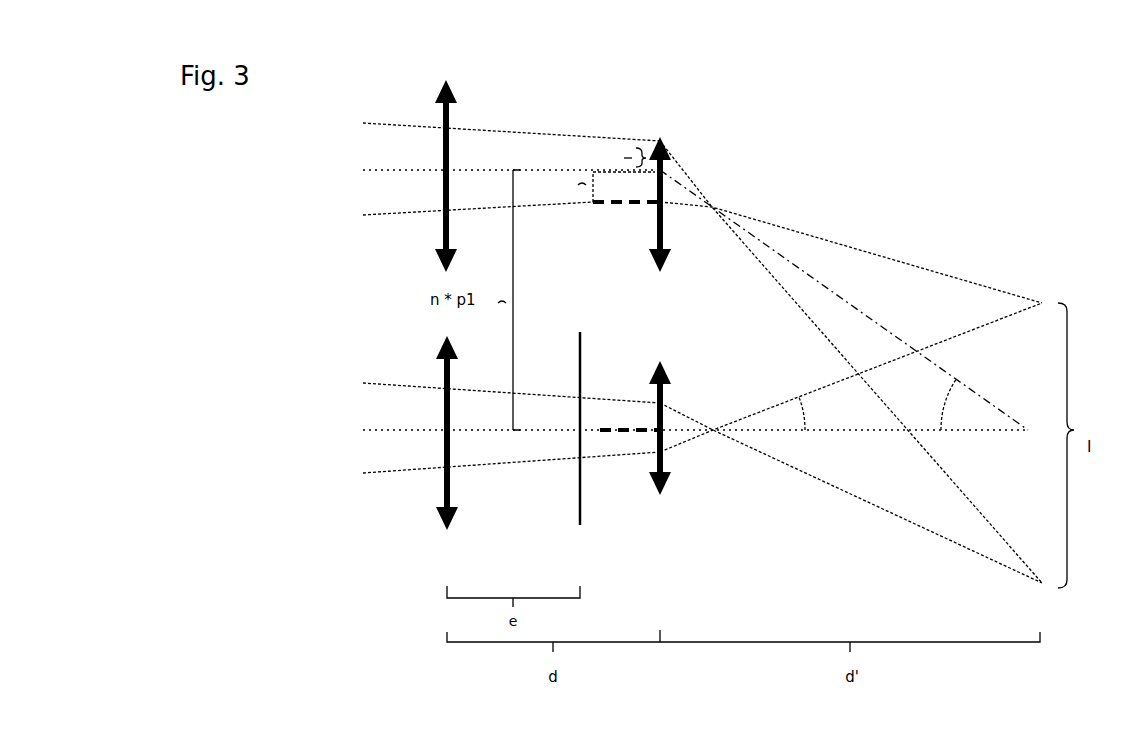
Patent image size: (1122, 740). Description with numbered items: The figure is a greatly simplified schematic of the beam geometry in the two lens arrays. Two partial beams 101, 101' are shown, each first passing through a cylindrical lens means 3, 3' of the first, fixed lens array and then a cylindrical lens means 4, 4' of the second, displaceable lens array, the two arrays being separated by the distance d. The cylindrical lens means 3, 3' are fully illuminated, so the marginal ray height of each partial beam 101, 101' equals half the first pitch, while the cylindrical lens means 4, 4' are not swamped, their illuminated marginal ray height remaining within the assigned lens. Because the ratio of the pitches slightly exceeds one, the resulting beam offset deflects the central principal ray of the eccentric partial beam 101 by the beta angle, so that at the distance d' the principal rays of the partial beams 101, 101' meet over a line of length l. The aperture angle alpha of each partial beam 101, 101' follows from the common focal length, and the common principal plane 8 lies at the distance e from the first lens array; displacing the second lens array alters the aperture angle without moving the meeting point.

The cylindrical lens means of the first lens array 3 is at (480, 158).
The cylindrical lens means of the second lens array 4 is at (696, 169).
The cylindrical lens means of the first lens array 3' is at (480, 455).
The cylindrical lens means of the second lens array 4' is at (694, 466).
The common principal plane 8 is at (584, 342).
The partial beam 101 is at (662, 352).
The partial beam 101' is at (655, 443).